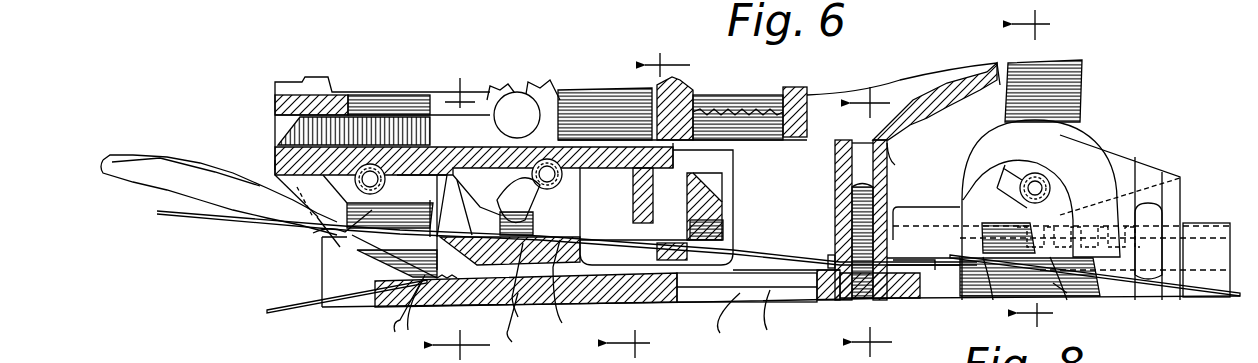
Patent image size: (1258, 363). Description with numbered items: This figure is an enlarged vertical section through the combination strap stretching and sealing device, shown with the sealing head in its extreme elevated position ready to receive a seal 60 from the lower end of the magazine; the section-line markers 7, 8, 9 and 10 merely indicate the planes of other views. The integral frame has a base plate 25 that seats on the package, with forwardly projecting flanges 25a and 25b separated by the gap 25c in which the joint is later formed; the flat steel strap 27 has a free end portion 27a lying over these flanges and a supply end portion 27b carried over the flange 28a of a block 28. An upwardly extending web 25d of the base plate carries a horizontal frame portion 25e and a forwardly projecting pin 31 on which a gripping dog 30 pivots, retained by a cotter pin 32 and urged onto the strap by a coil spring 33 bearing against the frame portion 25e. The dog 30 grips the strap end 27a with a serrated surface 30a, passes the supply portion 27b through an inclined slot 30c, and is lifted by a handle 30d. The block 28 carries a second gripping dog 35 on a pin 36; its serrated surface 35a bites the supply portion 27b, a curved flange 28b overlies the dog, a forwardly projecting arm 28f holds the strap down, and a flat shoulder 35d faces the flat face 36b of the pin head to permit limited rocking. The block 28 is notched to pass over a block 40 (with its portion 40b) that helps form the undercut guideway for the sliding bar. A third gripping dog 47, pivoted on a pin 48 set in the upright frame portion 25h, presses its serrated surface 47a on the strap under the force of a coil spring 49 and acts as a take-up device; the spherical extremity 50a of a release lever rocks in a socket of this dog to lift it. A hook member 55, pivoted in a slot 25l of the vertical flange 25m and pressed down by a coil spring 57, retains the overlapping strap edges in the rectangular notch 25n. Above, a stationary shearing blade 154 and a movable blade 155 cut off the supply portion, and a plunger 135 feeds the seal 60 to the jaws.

The section line 7- 7 is at (468, 207).
The section line 8- 8 is at (658, 203).
The section line 9- 9 is at (1041, 182).
The section line 10- 10 is at (880, 220).
The base plate 25 is at (620, 290).
The forwardly projecting flange 25a is at (427, 313).
The forwardly projecting flange 25b is at (883, 287).
The gap 25c is at (736, 328).
The upwardly extending web portion 25d is at (325, 260).
The horizontal frame portion 25e is at (640, 167).
The upwardly extending frame portion 25h is at (273, 162).
The slot 25l is at (675, 289).
The vertical flange or web 25m is at (883, 160).
The rectangular notch 25n is at (935, 293).
The flat flexible steel strap 27 is at (280, 315).
The free end portion of the strap 27a is at (783, 313).
The supply end portion of the strap 27b is at (775, 248).
The block 28 is at (1110, 170).
The flange 28a is at (1053, 283).
The curved flange 28b is at (1050, 157).
The forwardly projecting arm 28f is at (1153, 213).
The gripping dog 30 is at (380, 243).
The serrated surface 30a is at (386, 309).
The inclined slot 30c is at (320, 247).
The handle 30d is at (163, 125).
The pin 31 is at (313, 233).
The cotter pin 32 is at (347, 173).
The coil spring 33 is at (405, 178).
The gripping dog 35 is at (1003, 187).
The serrated surface 35a is at (995, 273).
The flat transverse shoulder 35d is at (1040, 297).
The pin 36 is at (1052, 158).
The flat face 36b is at (1003, 183).
The block 40 is at (1197, 233).
The rack portion 40b is at (1150, 200).
The gripping dog 47 is at (568, 293).
The serrated surface 47a is at (527, 328).
The pin 48 is at (553, 187).
The coil spring 49 is at (480, 213).
The spherical extremity 50a is at (510, 287).
The hook member 55 is at (837, 223).
The coil spring 57 is at (833, 183).
The seal 60 is at (610, 95).
The plunger 135 is at (453, 130).
The shearing blade 154 is at (650, 273).
The movable blade 155 is at (720, 207).